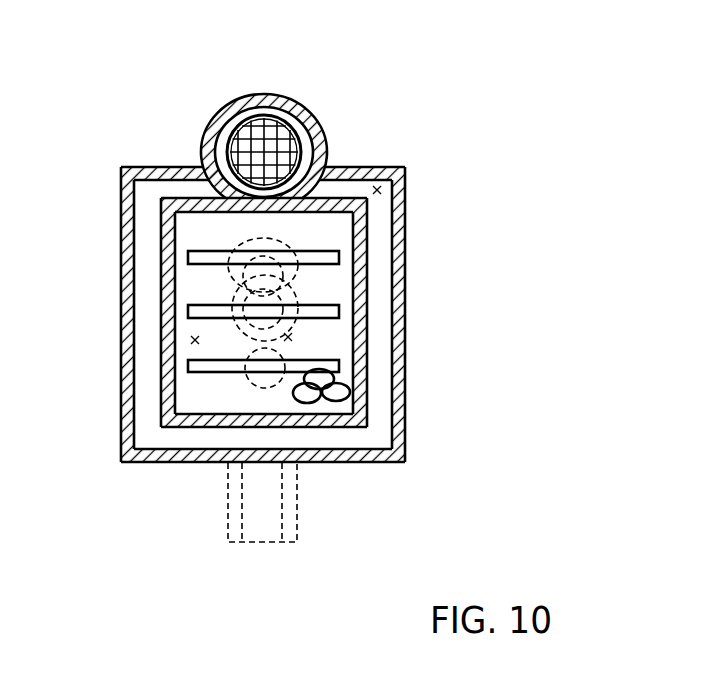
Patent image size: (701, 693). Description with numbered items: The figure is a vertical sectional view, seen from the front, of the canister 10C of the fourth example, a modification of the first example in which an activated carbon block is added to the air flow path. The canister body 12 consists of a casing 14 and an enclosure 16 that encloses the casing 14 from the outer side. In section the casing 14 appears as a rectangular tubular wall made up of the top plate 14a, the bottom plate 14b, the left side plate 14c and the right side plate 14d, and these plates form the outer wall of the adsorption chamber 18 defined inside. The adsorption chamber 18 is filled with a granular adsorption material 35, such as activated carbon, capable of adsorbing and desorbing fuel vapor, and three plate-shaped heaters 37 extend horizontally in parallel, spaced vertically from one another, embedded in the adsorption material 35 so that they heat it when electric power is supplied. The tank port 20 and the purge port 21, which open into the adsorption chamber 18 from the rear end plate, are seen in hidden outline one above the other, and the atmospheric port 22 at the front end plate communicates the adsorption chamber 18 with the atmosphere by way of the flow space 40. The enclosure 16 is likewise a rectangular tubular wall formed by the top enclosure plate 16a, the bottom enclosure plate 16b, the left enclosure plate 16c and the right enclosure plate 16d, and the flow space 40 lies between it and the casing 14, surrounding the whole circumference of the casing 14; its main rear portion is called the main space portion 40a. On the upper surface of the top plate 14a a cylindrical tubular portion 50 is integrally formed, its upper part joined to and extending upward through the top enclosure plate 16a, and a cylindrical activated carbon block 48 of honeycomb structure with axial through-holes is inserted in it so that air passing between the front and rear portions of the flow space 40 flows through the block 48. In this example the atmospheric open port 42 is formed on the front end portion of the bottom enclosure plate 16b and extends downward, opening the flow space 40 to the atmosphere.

The canister 10C is at (396, 101).
The canister body 12 is at (440, 191).
The casing 14 is at (152, 280).
The top plate 14a is at (183, 208).
The bottom plate 14b is at (192, 420).
The left side plate 14c is at (170, 400).
The right side plate 14d is at (360, 318).
The enclosure 16 is at (415, 293).
The top enclosure plate 16a is at (345, 177).
The bottom enclosure plate 16b is at (357, 455).
The left enclosure plate 16c is at (128, 188).
The right enclosure plate 16d is at (397, 367).
The adsorption chamber 18 is at (195, 340).
The tank port 20 is at (300, 277).
The purge port 21 is at (266, 390).
The atmospheric port 22 is at (290, 338).
The adsorption material 35 is at (340, 392).
The heaters 37 is at (200, 253).
The flow space 40 is at (382, 186).
The main space portion 40a is at (376, 223).
The atmospheric open port 42 is at (287, 530).
The activated carbon block 48 is at (248, 112).
The cylindrical tubular portion 50 is at (280, 102).